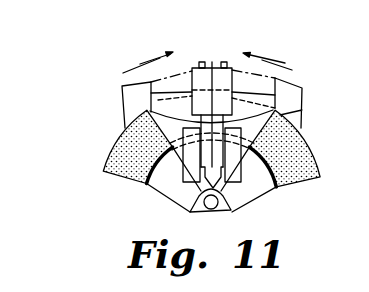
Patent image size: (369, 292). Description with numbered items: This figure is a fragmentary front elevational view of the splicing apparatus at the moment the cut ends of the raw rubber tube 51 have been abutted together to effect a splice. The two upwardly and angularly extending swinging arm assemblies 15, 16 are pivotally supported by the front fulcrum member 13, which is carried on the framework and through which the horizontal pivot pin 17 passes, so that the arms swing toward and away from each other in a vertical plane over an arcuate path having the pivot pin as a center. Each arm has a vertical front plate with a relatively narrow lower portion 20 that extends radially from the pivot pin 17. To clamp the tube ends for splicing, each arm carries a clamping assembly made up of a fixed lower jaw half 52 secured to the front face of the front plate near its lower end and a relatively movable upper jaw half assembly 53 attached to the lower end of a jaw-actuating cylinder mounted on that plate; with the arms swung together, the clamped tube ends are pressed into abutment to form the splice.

The swinging arm assembly 15 is at (110, 88).
The swinging arm assembly 16 is at (314, 98).
The upper jaw half assembly 53 is at (153, 102).
The raw rubber tube 51 is at (102, 162).
The fixed lower jaw half 52 is at (146, 185).
The front fulcrum member 13 is at (234, 209).
The lower portion of front plate 20 is at (181, 189).
The horizontal pivot pin 17 is at (228, 213).